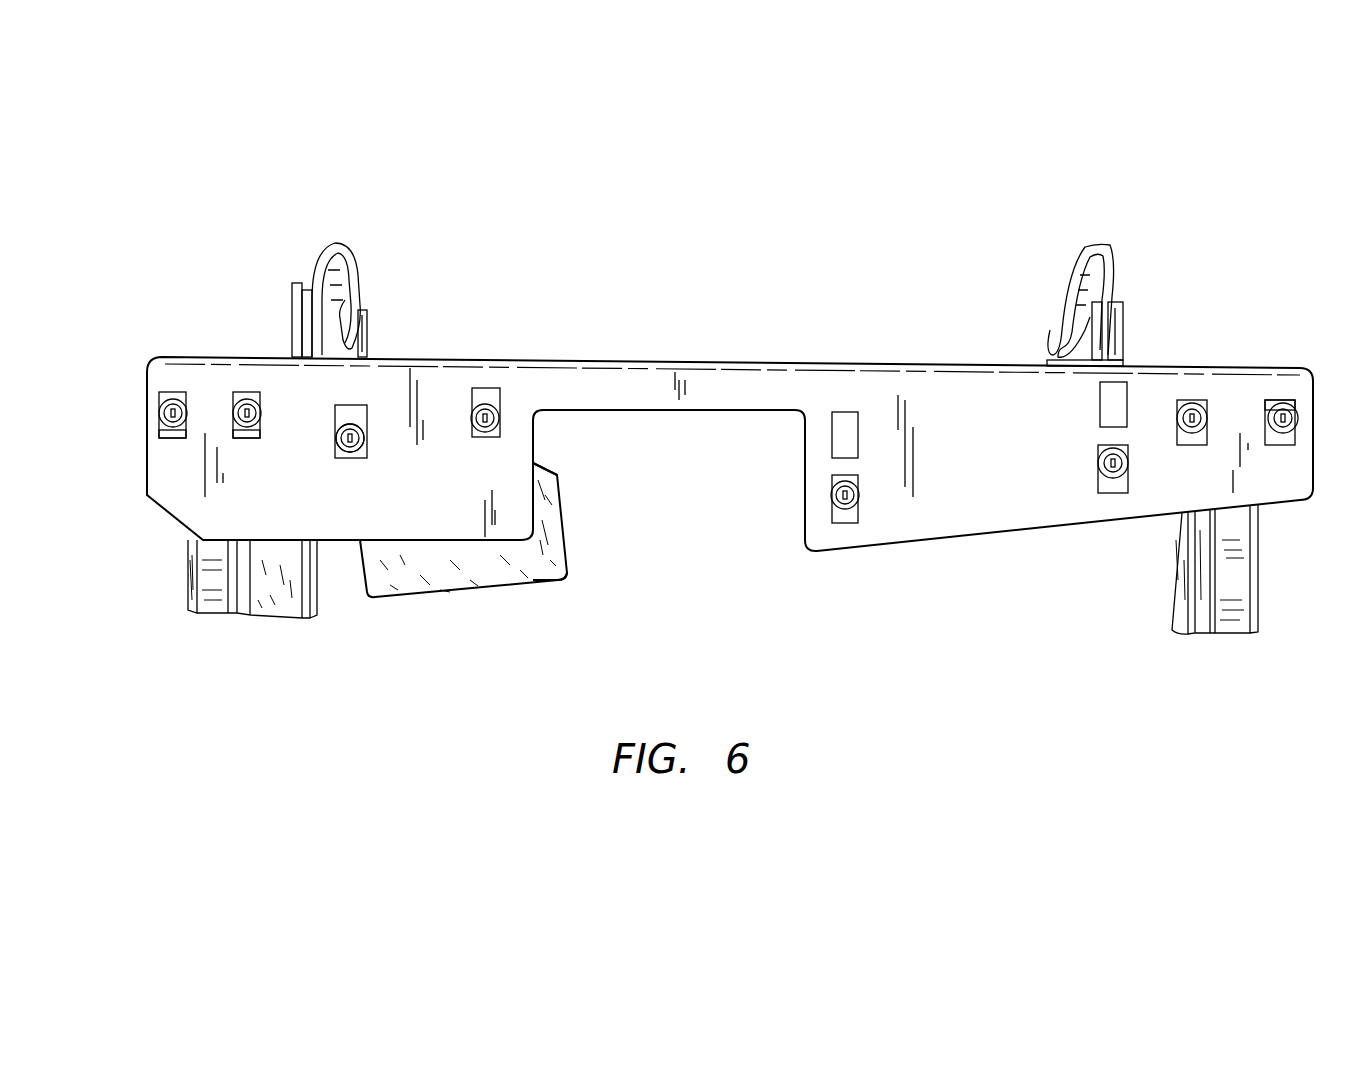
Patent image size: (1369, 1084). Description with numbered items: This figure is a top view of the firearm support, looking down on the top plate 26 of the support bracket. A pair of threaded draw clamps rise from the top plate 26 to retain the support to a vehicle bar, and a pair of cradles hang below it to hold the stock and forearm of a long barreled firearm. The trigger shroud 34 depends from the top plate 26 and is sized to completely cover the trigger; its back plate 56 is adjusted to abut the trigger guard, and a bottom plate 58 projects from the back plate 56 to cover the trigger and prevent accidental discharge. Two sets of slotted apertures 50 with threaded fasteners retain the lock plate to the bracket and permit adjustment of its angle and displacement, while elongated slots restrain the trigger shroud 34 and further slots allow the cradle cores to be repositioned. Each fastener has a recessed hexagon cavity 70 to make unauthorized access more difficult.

The top plate 26 is at (150, 385).
The trigger shroud 34 is at (565, 497).
The slotted aperture 50 is at (837, 478).
The back plate 56 is at (547, 468).
The bottom plate 58 is at (567, 573).
The recessed hexagon cavity 70 is at (1100, 470).